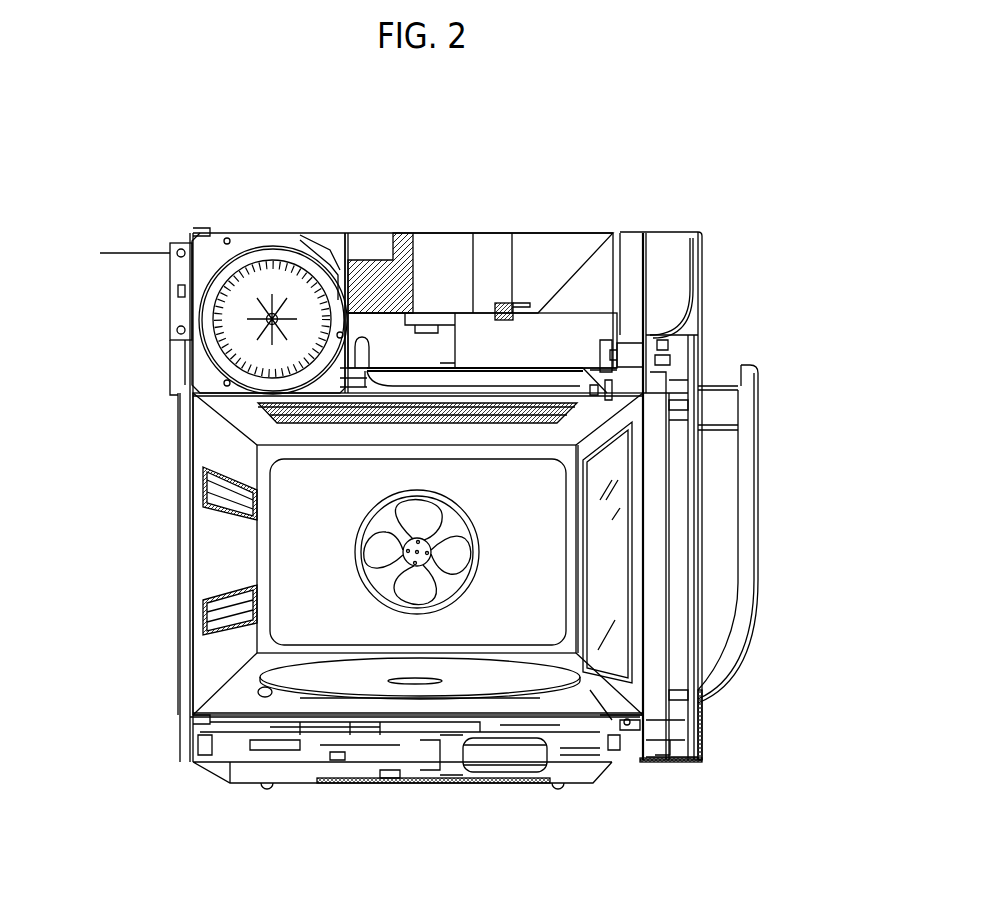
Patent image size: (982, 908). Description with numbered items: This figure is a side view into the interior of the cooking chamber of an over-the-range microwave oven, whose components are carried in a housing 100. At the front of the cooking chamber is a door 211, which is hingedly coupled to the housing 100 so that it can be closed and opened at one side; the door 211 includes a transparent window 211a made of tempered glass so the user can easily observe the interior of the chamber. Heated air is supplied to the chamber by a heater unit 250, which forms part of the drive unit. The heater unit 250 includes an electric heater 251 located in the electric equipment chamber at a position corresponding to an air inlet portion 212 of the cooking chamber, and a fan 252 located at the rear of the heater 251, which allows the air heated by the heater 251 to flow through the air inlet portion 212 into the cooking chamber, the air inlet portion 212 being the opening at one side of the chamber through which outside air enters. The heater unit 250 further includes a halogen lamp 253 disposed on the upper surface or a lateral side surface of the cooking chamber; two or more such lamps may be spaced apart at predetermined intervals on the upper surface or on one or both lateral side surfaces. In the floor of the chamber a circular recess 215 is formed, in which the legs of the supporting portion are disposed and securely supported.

The housing 100 is at (155, 399).
The door 211 is at (650, 465).
The transparent window 211a is at (613, 545).
The air inlet portion 212 is at (383, 519).
The circular recess 215 is at (320, 700).
The heater unit 250 is at (90, 478).
The electric heater 251 is at (405, 542).
The fan 252 is at (382, 552).
The halogen lamp 253 is at (203, 620).